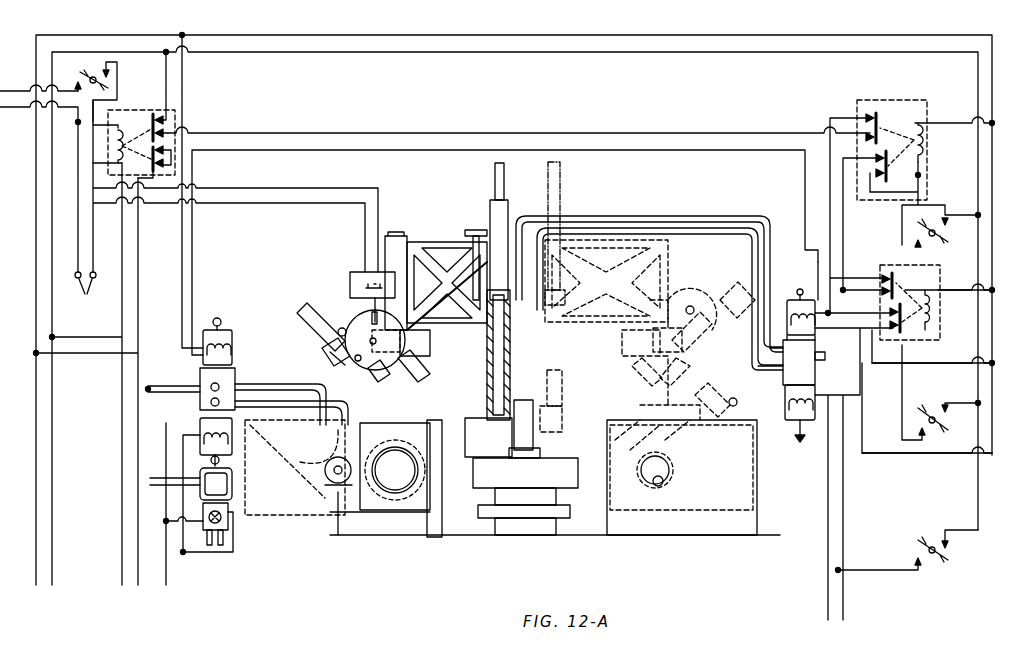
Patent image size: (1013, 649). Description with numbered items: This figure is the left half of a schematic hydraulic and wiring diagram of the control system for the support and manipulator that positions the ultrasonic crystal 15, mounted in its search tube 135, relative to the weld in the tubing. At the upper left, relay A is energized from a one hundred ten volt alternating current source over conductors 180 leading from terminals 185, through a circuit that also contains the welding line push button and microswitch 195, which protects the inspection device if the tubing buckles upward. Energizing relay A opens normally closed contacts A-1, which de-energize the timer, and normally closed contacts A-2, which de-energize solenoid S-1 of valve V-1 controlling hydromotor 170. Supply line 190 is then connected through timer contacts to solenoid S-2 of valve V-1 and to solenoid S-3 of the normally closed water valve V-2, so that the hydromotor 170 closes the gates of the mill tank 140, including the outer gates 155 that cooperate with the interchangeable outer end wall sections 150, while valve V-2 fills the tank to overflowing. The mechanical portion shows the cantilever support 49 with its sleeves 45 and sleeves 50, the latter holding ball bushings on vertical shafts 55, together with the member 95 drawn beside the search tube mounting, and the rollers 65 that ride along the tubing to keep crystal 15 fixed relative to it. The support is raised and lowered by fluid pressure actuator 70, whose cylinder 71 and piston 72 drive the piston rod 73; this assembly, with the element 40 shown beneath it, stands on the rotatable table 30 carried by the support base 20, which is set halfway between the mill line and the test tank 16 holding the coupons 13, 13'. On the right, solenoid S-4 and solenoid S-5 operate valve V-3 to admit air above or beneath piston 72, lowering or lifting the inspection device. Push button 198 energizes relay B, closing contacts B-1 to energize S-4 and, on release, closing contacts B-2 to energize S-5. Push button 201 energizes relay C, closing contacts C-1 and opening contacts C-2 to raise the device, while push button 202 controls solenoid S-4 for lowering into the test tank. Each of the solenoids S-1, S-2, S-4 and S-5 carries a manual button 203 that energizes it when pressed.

The relay A is at (108, 143).
The normally closed contacts A-1 is at (150, 185).
The normally closed contacts A-2 is at (157, 118).
The conductors 180 is at (96, 265).
The terminals 185 is at (82, 301).
The supply line 190 is at (36, 440).
The buttons 203 is at (218, 316).
The solenoid S-1 is at (232, 352).
The valve V-1 is at (236, 378).
The solenoid S-2 is at (205, 432).
The solenoid S-3 is at (207, 517).
The water valve V-2 is at (226, 523).
The fluid pressure motor 170 is at (330, 490).
The outer gates 155 is at (404, 422).
The outer end wall sections 150 is at (415, 498).
The mill tank 140 is at (403, 523).
The microswitch 195 is at (366, 285).
The disc 95 is at (352, 320).
The vertical shafts 55 is at (402, 334).
The search tube 135 is at (306, 318).
The ultrasonic crystal 15 is at (352, 362).
The rollers 65 is at (388, 386).
The sleeves 50 is at (398, 240).
The cantilever support 49 is at (428, 245).
The piston rod 73 is at (494, 175).
The piston 72 is at (487, 338).
The fluid pressure actuator 70 is at (480, 358).
The cylinder 71 is at (490, 384).
The sleeves 45 is at (522, 330).
The ram 40 is at (527, 438).
The table 30 is at (524, 503).
The support base 20 is at (525, 527).
The test tank 16 is at (757, 485).
The coupon 13 is at (680, 470).
The coupon 13' is at (687, 489).
The solenoid S-5 is at (792, 303).
The valve V-3 is at (815, 375).
The solenoid S-4 is at (786, 405).
The relay B is at (890, 105).
The contacts B-1 is at (884, 190).
The contacts B-2 is at (874, 114).
The relay C is at (893, 270).
The contacts C-1 is at (903, 335).
The contacts C-2 is at (898, 275).
The push button 198 is at (936, 228).
The push button 201 is at (936, 416).
The push button 202 is at (936, 556).